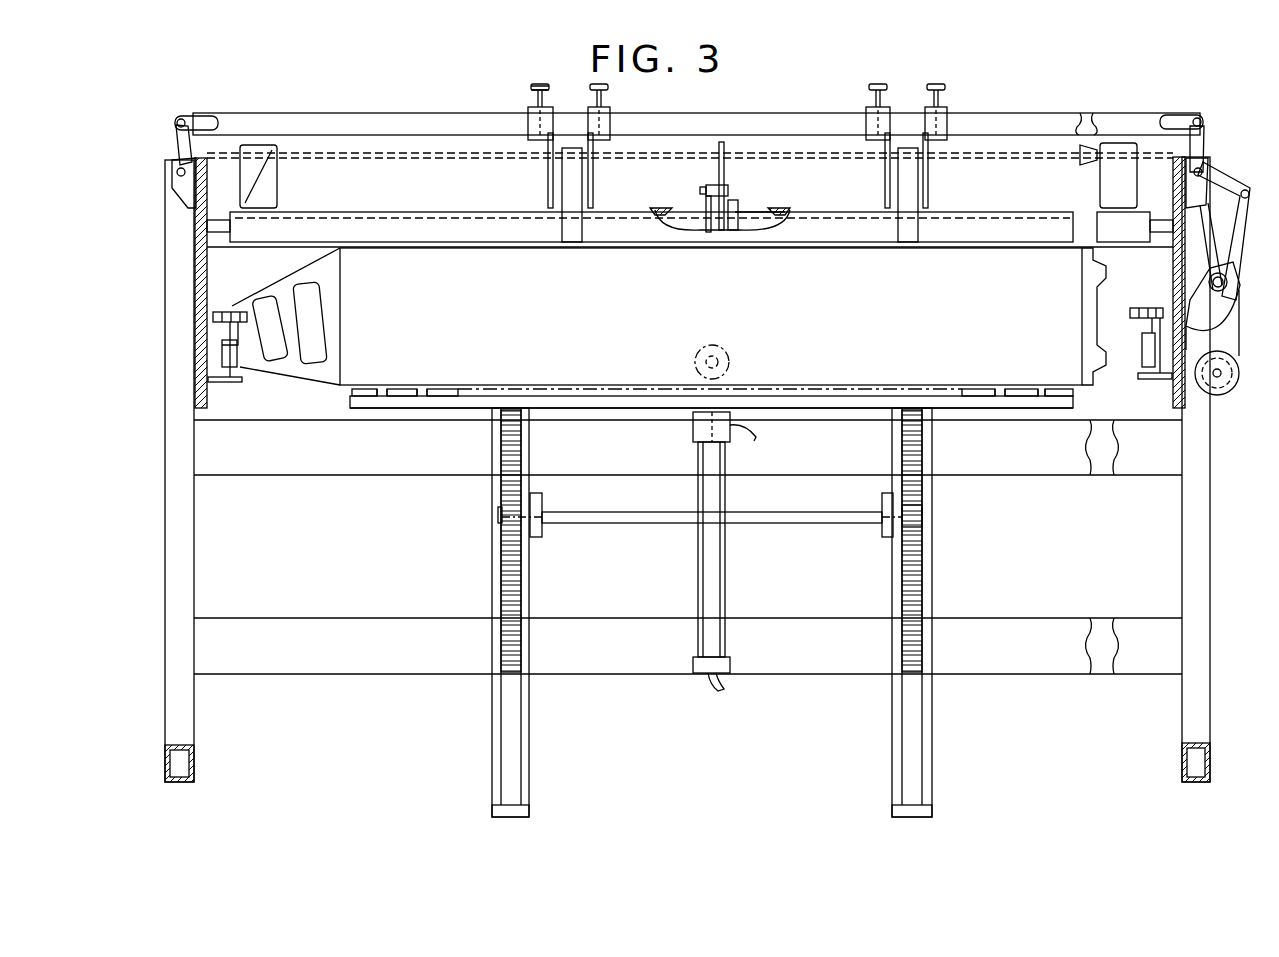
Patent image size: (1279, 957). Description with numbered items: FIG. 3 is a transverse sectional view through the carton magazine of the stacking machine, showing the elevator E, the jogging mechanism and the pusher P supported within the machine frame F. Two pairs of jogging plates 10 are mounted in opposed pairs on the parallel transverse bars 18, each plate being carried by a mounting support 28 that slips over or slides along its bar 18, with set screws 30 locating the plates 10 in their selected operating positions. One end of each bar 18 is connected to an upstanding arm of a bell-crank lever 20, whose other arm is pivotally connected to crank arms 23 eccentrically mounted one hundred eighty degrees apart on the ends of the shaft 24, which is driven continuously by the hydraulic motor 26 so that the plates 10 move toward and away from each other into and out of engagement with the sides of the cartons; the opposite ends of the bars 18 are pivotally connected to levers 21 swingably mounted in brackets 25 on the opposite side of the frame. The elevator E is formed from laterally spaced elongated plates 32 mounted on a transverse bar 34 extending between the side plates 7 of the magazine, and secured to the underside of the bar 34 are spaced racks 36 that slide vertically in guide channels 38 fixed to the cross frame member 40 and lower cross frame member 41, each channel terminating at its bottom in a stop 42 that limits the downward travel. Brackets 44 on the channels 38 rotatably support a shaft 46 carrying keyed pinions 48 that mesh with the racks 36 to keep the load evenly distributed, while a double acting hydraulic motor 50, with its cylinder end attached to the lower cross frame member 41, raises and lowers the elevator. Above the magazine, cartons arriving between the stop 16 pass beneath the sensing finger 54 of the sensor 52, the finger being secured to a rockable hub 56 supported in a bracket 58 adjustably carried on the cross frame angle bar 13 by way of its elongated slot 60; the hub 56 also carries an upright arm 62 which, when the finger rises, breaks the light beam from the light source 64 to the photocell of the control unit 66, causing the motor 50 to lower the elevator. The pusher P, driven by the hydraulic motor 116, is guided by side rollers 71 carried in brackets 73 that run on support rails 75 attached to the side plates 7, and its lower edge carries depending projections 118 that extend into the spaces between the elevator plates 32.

The side plates 7 is at (200, 172).
The jogging plates 10 is at (548, 180).
The cross frame angle bar 13 is at (690, 229).
The stop 16 is at (572, 232).
The transverse bars 18 is at (338, 113).
The bell-crank lever 20 is at (1190, 135).
The levers 21 is at (185, 113).
The crank arms 23 is at (1228, 245).
The shaft 24 is at (1212, 282).
The brackets 25 is at (183, 190).
The hydraulic motor 26 is at (1200, 375).
The mounting supports 28 is at (528, 108).
The set screws 30 is at (536, 86).
The elongated plates 32 is at (412, 390).
The transverse bar 34 is at (460, 403).
The racks 36 is at (515, 458).
The guide channels 38 is at (525, 484).
The cross frame member 40 is at (443, 462).
The lower cross frame member 41 is at (422, 630).
The stop 42 is at (514, 814).
The brackets 44 is at (538, 522).
The shaft 46 is at (635, 514).
The pinions 48 is at (912, 528).
The hydraulic motor 50 is at (712, 555).
The sensor 52 is at (280, 193).
The sensing finger 54 is at (730, 216).
The rockable hub 56 is at (712, 185).
The bracket 58 is at (706, 206).
The elongated slot 60 is at (745, 216).
The upright arm 62 is at (724, 165).
The light source 64 is at (1110, 178).
The control unit 66 is at (258, 146).
The side rollers 71 is at (240, 314).
The brackets 73 is at (265, 298).
The support rails 75 is at (222, 382).
The hydraulic motor 116 is at (732, 360).
The depending projections 118 is at (422, 397).
The elevator E is at (946, 405).
The machine frame F is at (188, 518).
The pusher P is at (711, 316).